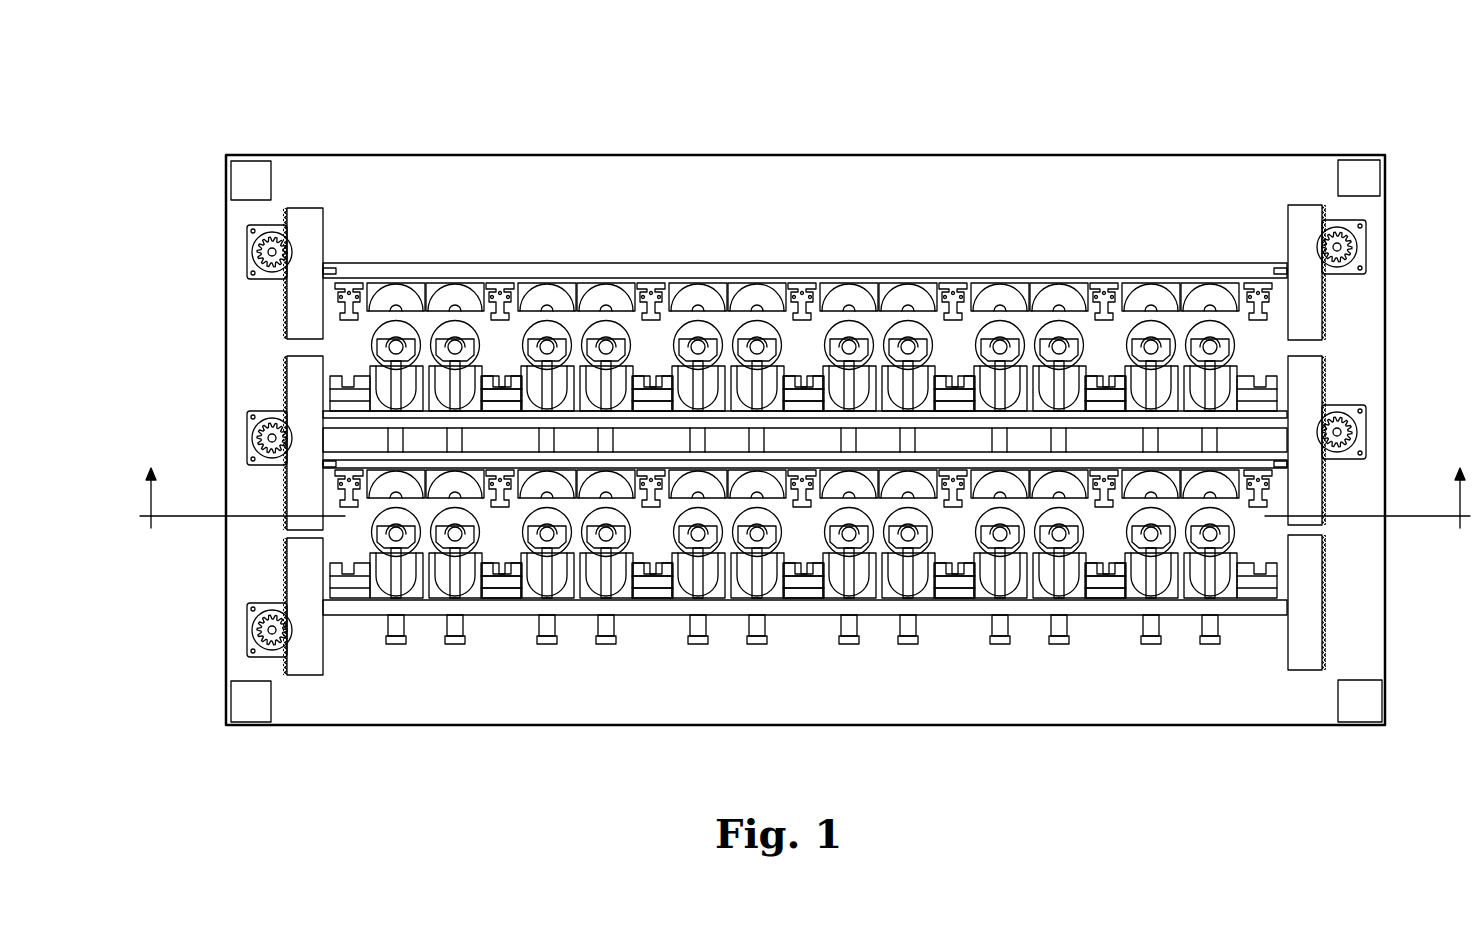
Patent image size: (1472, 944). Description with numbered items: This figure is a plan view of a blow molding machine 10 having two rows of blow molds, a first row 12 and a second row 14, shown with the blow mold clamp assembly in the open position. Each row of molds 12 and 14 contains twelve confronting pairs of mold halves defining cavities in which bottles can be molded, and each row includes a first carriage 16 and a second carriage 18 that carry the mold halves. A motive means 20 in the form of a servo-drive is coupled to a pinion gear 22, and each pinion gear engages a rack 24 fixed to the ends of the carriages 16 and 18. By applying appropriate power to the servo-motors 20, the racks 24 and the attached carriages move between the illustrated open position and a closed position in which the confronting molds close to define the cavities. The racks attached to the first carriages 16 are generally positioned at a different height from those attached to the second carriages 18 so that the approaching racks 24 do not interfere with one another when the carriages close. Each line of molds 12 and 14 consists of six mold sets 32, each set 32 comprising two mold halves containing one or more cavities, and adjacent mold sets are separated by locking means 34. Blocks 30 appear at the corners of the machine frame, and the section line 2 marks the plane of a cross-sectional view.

The blow molding machine 10 is at (1200, 115).
The row of blow molds 12 is at (884, 319).
The row of blow molds 14 is at (1350, 562).
The first carriage 16 is at (345, 432).
The second carriage 18 is at (404, 274).
The motive means 20 is at (263, 252).
The pinion gear 22 is at (263, 631).
The rack 24 is at (305, 222).
The corner mounting block 30 is at (252, 172).
The mold set 32 is at (584, 290).
The locking means 34 is at (670, 278).
The section line 2- 2 is at (805, 514).